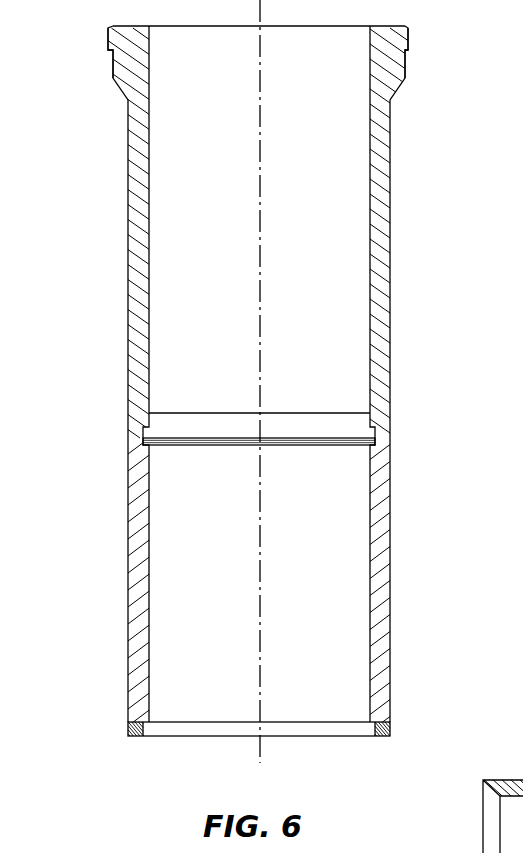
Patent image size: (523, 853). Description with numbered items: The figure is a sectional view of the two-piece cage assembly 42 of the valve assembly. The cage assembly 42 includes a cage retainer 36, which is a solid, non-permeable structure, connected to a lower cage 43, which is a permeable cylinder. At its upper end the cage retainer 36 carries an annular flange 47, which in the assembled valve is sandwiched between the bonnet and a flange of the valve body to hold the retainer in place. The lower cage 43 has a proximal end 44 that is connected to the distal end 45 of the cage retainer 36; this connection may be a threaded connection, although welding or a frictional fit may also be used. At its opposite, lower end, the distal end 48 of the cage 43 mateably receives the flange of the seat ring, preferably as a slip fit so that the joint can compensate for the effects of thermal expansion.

The cage assembly 42 is at (252, 407).
The cage retainer 36 is at (392, 216).
The cage 43 is at (392, 603).
The annular flange 47 is at (409, 40).
The distal end of the cage retainer 45 is at (383, 418).
The proximal end of the cage 44 is at (379, 437).
The distal end of the cage 48 is at (130, 737).